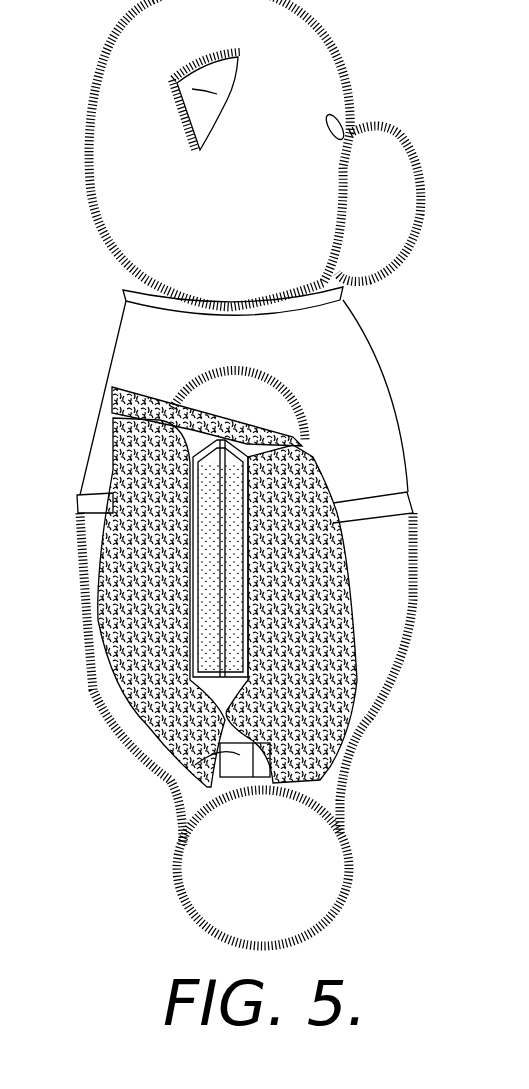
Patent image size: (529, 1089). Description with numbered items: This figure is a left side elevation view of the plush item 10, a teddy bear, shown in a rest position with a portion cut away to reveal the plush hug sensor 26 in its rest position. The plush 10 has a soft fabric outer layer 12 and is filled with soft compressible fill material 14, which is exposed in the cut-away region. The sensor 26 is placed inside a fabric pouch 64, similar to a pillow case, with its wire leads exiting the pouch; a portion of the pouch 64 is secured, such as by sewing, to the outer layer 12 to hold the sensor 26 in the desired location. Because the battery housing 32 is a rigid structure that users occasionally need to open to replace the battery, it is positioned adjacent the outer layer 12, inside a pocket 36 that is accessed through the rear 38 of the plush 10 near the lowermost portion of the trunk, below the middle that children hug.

The plush item 10 is at (86, 152).
The outer layer 12 is at (76, 530).
The fill material 14 is at (127, 660).
The plush hug sensor 26 is at (200, 583).
The battery housing 32 is at (168, 782).
The pocket 36 is at (257, 787).
The rear 38 is at (130, 748).
The fabric pouch 64 is at (203, 433).